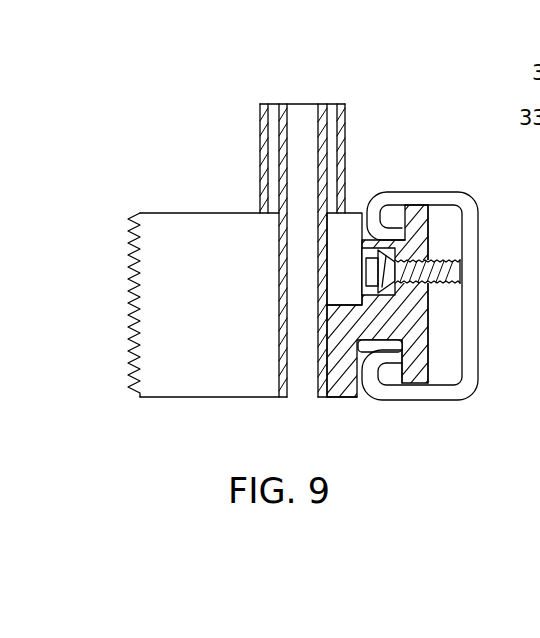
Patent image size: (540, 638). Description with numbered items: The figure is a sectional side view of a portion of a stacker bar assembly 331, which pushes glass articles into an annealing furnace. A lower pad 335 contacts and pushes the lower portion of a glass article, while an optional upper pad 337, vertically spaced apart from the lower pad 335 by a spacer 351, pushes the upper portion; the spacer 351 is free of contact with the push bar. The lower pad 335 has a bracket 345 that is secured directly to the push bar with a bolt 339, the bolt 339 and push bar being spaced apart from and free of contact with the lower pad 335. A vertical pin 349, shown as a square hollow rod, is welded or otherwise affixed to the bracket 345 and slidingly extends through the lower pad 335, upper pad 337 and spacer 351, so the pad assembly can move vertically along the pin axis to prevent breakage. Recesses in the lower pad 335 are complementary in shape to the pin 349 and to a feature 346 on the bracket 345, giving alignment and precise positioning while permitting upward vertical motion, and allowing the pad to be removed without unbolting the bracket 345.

The stacker bar assembly 331 is at (184, 140).
The lower pad 335 is at (162, 302).
The upper pad 337 is at (470, 350).
The bolt 339 is at (452, 268).
The bracket 345 is at (417, 362).
The feature 346 is at (345, 387).
The vertical pin 349 is at (322, 104).
The spacer 351 is at (340, 146).